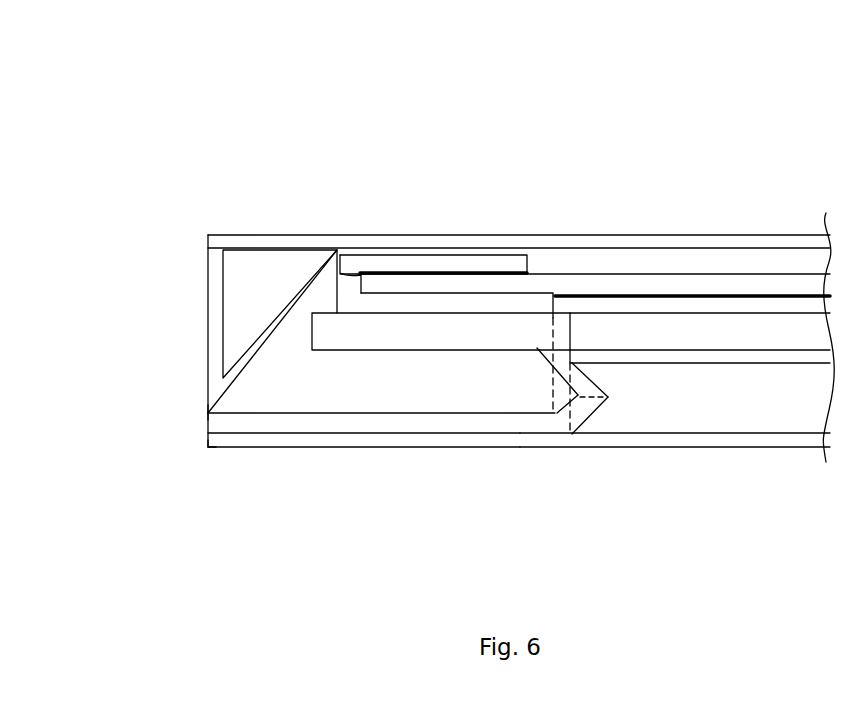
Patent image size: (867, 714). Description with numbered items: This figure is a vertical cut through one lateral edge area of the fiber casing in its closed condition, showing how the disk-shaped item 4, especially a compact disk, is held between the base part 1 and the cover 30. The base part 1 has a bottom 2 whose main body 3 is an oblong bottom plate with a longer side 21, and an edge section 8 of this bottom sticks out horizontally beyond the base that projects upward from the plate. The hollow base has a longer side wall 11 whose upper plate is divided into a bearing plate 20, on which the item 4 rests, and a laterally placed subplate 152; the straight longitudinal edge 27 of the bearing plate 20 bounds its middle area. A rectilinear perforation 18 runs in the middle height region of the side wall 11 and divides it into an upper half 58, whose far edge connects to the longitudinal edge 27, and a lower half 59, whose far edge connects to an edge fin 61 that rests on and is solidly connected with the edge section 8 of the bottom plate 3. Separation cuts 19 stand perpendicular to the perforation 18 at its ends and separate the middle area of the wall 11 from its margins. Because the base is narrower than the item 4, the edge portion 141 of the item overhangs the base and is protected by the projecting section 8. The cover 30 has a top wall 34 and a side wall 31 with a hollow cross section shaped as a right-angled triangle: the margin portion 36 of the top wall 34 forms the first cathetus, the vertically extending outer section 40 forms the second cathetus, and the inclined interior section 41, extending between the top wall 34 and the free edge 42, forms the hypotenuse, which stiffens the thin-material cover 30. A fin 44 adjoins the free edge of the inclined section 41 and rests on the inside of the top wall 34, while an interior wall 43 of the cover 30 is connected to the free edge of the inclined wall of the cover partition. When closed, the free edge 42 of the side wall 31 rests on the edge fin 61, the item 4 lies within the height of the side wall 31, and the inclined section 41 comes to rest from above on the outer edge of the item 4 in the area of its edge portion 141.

The base part 1 is at (439, 483).
The bottom 2 is at (533, 463).
The main body 3 is at (710, 441).
The disk-shaped item 4 is at (337, 250).
The section 8 is at (318, 440).
The side wall 11 is at (551, 406).
The perforation 18 is at (608, 397).
The separation cut 19 is at (556, 388).
The bearing plate 20 is at (796, 374).
The side 21 is at (208, 446).
The longitudinal edge 27 is at (537, 348).
The cover 30 is at (607, 214).
The side wall 31 is at (197, 330).
The top wall 34 is at (717, 236).
The margin portion 36 is at (248, 250).
The outer section 40 is at (219, 280).
The interior section 41 is at (246, 363).
The free edge 42 is at (207, 414).
The interior wall 43 is at (790, 285).
The fin 44 is at (398, 262).
The upper half 58 is at (600, 380).
The lower half 59 is at (595, 415).
The edge fin 61 is at (378, 422).
The edge portion 141 is at (450, 341).
The subplate 152 is at (657, 305).